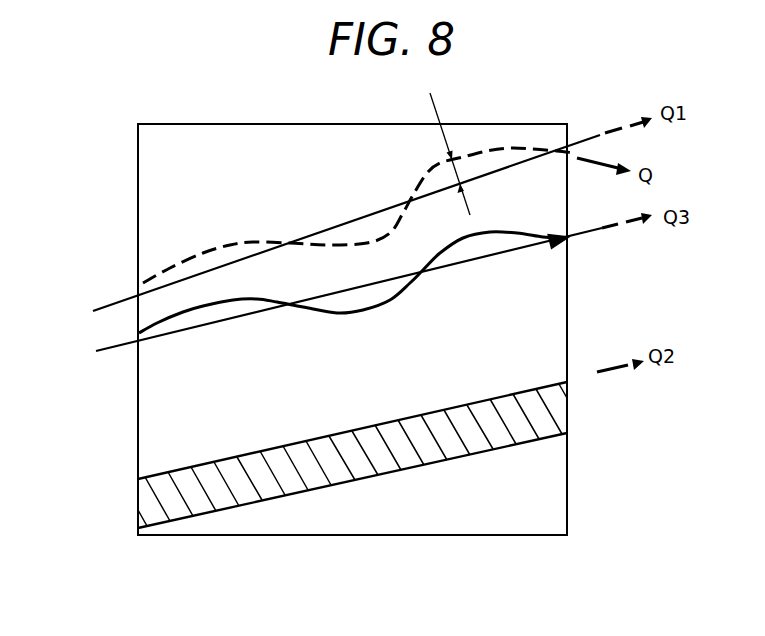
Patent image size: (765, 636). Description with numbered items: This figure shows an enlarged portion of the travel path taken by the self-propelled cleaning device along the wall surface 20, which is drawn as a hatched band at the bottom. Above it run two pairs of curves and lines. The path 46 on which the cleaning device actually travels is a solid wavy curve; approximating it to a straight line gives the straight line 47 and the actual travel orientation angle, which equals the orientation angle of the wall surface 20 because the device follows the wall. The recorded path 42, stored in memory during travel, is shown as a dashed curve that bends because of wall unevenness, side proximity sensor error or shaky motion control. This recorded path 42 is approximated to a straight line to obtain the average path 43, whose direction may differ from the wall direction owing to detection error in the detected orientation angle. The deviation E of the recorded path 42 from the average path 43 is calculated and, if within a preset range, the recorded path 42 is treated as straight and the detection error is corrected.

The wall surface 20 is at (207, 500).
The recorded path 42 is at (205, 253).
The average path 43 is at (115, 303).
The path on which the self-propelled cleaning device actually travels 46 is at (187, 312).
The straight reference line 47 is at (112, 348).
The deviation E is at (453, 163).